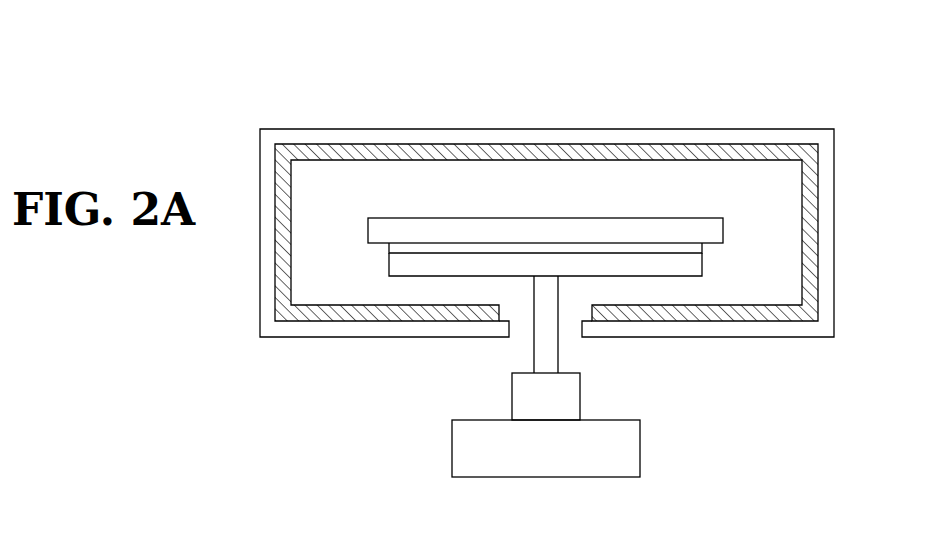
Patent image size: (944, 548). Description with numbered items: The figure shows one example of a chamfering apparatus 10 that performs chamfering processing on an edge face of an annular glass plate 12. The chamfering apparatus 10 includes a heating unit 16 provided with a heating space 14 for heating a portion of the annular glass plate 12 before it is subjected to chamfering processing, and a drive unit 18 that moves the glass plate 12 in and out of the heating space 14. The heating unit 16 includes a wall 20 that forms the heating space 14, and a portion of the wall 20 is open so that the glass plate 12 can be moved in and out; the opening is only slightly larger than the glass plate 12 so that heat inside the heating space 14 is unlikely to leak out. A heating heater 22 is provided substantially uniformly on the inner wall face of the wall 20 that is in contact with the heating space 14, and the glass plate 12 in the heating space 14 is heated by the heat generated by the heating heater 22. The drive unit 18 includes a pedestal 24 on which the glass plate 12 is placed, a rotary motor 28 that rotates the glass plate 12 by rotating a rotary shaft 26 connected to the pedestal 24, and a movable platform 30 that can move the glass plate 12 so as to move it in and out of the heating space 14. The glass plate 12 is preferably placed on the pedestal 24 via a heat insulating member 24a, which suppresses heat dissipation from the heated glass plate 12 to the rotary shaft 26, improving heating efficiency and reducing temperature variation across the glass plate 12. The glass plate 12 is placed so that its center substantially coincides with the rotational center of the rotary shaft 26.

The chamfering apparatus 10 is at (741, 54).
The annular glass plate 12 is at (565, 232).
The heating space 14 is at (764, 220).
The heating unit 16 is at (845, 211).
The drive unit 18 is at (641, 408).
The wall 20 is at (553, 140).
The heating heater 22 is at (494, 148).
The pedestal 24 is at (687, 268).
The heat insulating member 24a is at (690, 248).
The rotary shaft 26 is at (548, 291).
The rotary motor 28 is at (565, 393).
The movable platform 30 is at (635, 447).